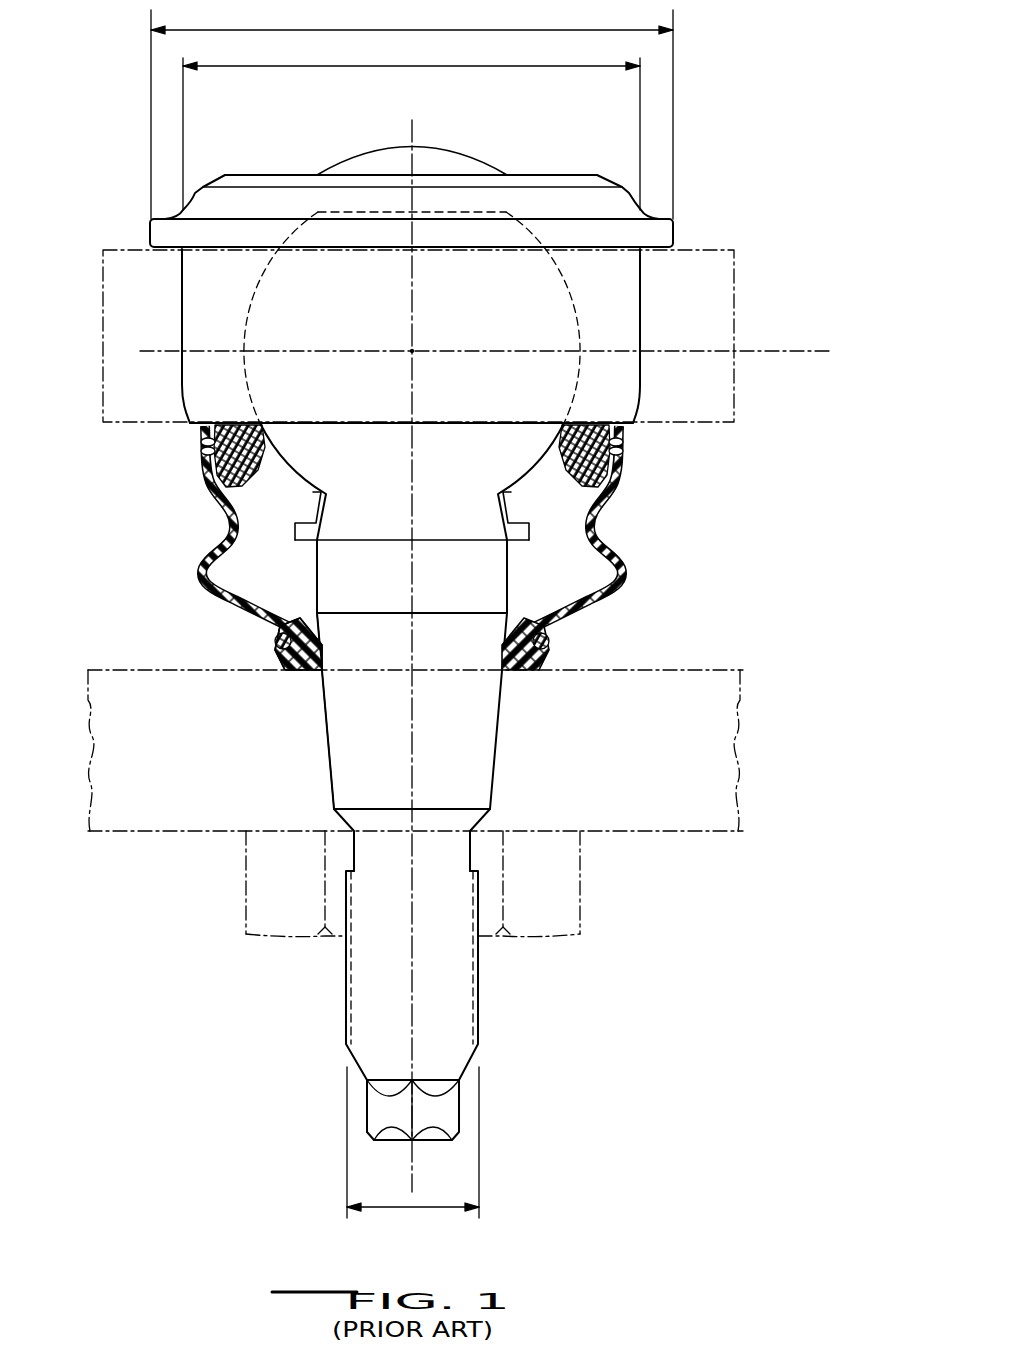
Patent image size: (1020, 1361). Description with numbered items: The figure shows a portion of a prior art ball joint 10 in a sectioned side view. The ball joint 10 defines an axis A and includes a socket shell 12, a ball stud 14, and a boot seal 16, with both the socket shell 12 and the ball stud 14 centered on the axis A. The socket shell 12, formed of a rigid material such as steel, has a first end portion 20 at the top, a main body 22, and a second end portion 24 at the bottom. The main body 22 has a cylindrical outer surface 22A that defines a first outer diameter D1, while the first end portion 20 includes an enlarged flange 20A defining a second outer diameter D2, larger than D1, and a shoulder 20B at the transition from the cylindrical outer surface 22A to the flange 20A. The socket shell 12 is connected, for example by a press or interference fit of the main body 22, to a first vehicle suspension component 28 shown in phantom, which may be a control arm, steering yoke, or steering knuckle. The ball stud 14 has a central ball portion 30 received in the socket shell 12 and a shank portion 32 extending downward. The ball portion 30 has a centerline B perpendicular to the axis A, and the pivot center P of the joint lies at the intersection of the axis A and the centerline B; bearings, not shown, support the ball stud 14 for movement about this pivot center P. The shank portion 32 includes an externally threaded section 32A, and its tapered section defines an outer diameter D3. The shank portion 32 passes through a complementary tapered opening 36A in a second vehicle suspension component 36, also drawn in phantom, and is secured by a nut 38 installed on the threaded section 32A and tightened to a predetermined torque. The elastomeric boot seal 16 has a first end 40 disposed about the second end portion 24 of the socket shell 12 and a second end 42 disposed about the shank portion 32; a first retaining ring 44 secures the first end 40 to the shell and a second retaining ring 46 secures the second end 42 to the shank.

The ball joint 10 is at (262, 1036).
The socket shell 12 is at (648, 307).
The ball stud 14 is at (321, 766).
The seal 16 is at (192, 567).
The first end portion 20 is at (538, 174).
The flange 20A is at (149, 233).
The shoulder 20B is at (171, 251).
The main body 22 is at (627, 383).
The cylindrical outer surface 22A is at (645, 347).
The second end portion 24 is at (530, 526).
The first vehicle suspension component 28 is at (708, 248).
The central ball portion 30 is at (285, 300).
The shank portion 32 is at (390, 784).
The externally threaded section 32A is at (346, 994).
The second vehicle suspension component 36 is at (635, 831).
The tapered opening 36A is at (498, 732).
The nut 38 is at (542, 940).
The first end 40 is at (201, 424).
The second end 42 is at (280, 672).
The first retaining ring 44 is at (198, 441).
The second retaining ring 46 is at (275, 641).
The axis A is at (412, 1153).
The centerline B is at (774, 350).
The pivot center P is at (411, 351).
The first outer diameter D1 is at (535, 68).
The second outer diameter D2 is at (537, 29).
The outer diameter D3 is at (437, 1212).